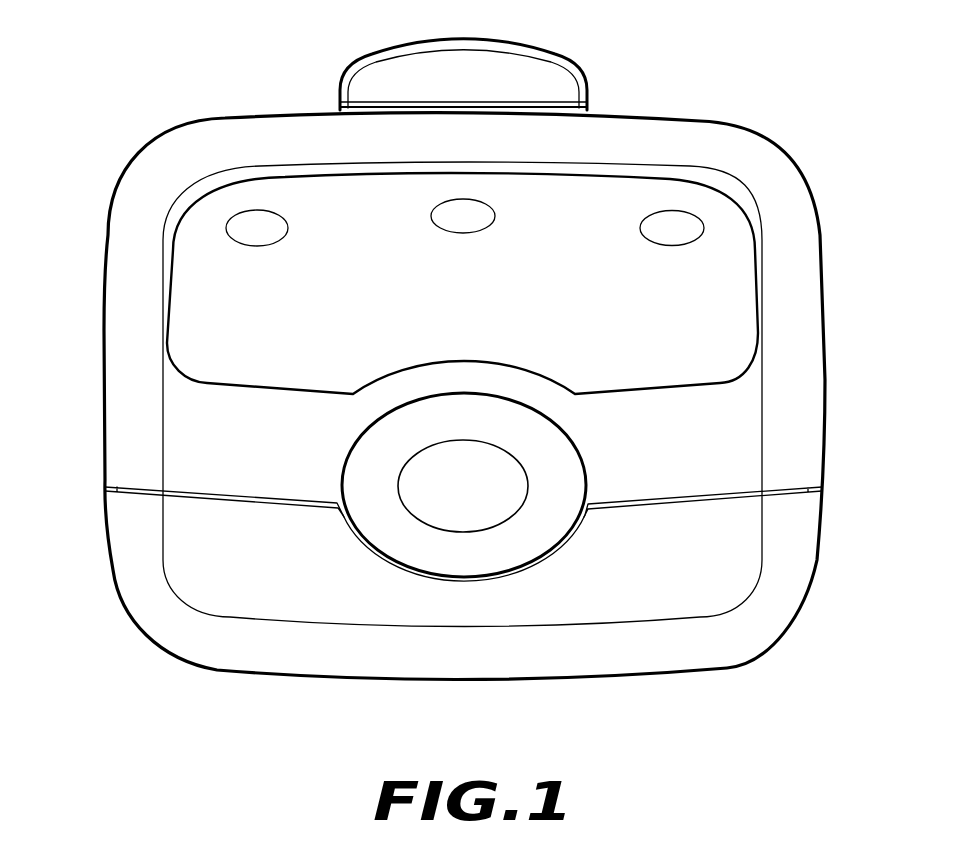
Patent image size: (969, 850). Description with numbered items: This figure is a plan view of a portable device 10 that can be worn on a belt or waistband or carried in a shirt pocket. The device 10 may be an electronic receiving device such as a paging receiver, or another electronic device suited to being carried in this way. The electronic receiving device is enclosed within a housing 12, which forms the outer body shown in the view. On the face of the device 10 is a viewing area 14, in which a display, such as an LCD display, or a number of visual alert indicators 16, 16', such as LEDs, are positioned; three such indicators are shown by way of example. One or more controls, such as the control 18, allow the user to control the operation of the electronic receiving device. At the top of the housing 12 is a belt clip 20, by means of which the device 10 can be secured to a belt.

The device 10 is at (637, 779).
The housing 12 is at (778, 254).
The viewing area 14 is at (213, 318).
The visual alert indicator 16 is at (230, 142).
The visual alert indicator 16' is at (568, 116).
The control 18 is at (497, 497).
The belt clip 20 is at (435, 72).